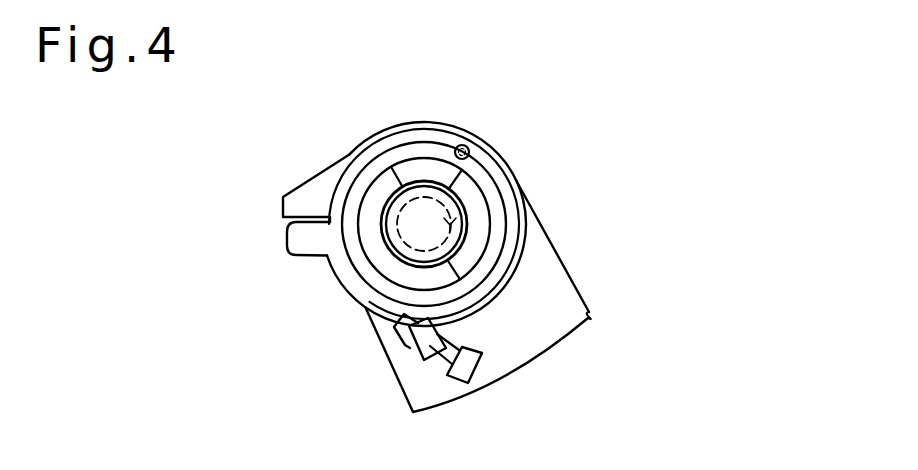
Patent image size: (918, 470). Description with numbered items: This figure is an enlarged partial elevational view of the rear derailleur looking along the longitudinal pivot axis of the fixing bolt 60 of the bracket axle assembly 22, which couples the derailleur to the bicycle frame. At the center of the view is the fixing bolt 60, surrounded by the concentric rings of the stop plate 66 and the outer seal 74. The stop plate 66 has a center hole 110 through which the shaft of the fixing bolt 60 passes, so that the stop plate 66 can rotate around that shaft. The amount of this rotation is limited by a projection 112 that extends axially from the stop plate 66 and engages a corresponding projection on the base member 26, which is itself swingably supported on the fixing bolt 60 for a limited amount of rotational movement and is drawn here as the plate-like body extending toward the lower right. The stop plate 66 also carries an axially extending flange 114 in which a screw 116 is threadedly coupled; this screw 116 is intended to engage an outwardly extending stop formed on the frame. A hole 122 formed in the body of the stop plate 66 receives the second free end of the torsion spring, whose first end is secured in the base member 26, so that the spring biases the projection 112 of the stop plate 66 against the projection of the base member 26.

The bracket axle assembly 22 is at (315, 209).
The base member 26 is at (377, 350).
The fixing bolt 60 is at (453, 193).
The stop plate 66 is at (375, 313).
The outer seal 74 is at (353, 197).
The center hole 110 is at (473, 206).
The projection 112 is at (288, 252).
The flange 114 is at (398, 360).
The screw 116 is at (473, 380).
The hole 122 is at (465, 145).